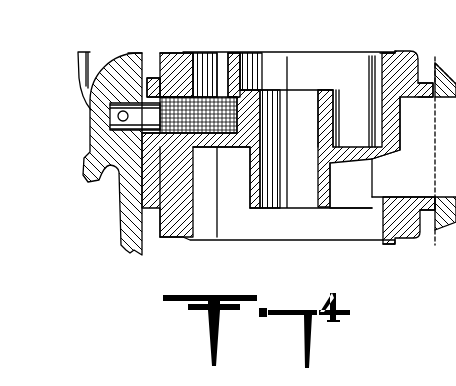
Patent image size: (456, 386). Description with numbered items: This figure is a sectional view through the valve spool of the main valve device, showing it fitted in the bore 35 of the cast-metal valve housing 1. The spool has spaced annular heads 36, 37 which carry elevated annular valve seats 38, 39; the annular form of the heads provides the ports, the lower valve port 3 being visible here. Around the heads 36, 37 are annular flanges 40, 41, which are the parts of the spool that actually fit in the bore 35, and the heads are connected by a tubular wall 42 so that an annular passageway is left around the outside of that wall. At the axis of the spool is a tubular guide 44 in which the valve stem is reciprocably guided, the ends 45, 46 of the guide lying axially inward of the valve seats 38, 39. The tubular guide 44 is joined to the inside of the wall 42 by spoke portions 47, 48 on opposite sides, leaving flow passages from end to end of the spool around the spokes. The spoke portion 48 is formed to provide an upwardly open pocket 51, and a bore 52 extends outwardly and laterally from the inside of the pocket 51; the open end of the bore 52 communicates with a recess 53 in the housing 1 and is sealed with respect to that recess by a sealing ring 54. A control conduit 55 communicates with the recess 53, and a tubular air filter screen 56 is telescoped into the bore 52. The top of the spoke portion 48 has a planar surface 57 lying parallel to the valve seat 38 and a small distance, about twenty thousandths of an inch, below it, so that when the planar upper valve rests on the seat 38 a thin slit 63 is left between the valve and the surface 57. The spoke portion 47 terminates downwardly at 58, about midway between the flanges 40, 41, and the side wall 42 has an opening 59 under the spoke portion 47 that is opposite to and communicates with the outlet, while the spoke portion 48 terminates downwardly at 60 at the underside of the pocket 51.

The valve housing 1 is at (128, 235).
The lower valve port 3 is at (355, 240).
The bore 35 is at (137, 197).
The upper annular head 36 is at (412, 53).
The lower annular head 37 is at (397, 236).
The upper annular valve seat 38 is at (388, 51).
The lower annular valve seat 39 is at (392, 241).
The upper annular flange 40 is at (428, 90).
The lower annular flange 41 is at (424, 203).
The tubular wall 42 is at (400, 131).
The tubular guide 44 is at (262, 203).
The upper end of the guide 45 is at (330, 92).
The lower end of the guide 46 is at (331, 208).
The spoke portion 47 is at (368, 133).
The spoke portion 48 is at (222, 60).
The pocket 51 is at (212, 52).
The bore 52 is at (175, 53).
The recess 53 is at (112, 125).
The sealing ring 54 is at (140, 53).
The control conduit 55 is at (88, 52).
The tubular air filter screen 56 is at (150, 80).
The planar surface 57 is at (235, 53).
The lower termination of spoke portion 47 58 is at (370, 160).
The opening 59 is at (397, 168).
The lower termination of spoke portion 48 60 is at (238, 148).
The thin slit 63 is at (270, 54).